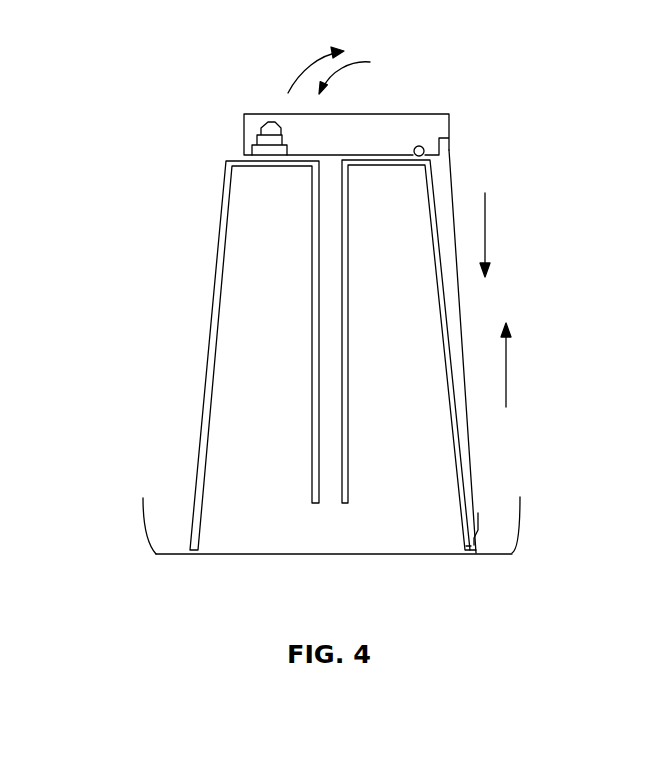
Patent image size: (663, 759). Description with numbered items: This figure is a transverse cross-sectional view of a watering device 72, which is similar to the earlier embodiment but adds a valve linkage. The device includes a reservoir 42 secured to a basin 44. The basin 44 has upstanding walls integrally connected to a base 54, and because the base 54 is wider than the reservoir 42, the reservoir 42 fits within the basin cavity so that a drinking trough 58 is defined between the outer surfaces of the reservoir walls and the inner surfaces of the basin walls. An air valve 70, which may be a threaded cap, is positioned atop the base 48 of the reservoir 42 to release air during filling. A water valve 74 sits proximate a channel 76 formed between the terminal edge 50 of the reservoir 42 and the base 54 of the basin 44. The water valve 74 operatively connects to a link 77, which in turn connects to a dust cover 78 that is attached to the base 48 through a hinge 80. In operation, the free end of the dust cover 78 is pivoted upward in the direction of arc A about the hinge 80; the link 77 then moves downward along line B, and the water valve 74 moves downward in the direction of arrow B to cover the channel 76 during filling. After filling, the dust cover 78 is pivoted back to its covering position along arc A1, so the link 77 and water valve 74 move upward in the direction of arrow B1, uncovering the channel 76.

The reservoir 42 is at (210, 347).
The basin 44 is at (527, 520).
The base of the reservoir 48 is at (355, 168).
The terminal edge of the reservoir 50 is at (463, 543).
The base of the basin 54 is at (330, 554).
The drinking trough 58 is at (164, 513).
The air valve 70 is at (260, 152).
The watering device 72 is at (112, 298).
The water valve 74 is at (478, 515).
The channel 76 is at (476, 553).
The link 77 is at (463, 322).
The dust cover 78 is at (400, 130).
The hinge 80 is at (426, 150).
The arc A is at (315, 62).
The arc A' A1 is at (347, 68).
The line B is at (485, 233).
The arrow B' B1 is at (506, 362).